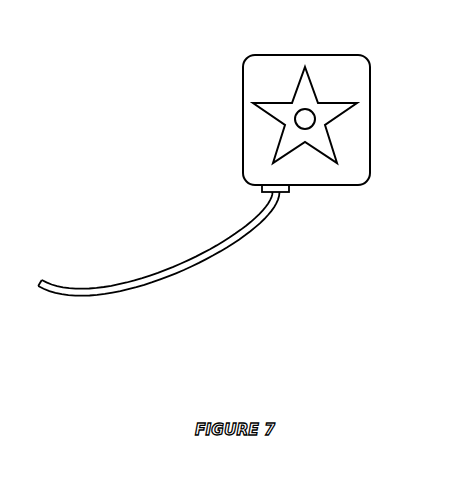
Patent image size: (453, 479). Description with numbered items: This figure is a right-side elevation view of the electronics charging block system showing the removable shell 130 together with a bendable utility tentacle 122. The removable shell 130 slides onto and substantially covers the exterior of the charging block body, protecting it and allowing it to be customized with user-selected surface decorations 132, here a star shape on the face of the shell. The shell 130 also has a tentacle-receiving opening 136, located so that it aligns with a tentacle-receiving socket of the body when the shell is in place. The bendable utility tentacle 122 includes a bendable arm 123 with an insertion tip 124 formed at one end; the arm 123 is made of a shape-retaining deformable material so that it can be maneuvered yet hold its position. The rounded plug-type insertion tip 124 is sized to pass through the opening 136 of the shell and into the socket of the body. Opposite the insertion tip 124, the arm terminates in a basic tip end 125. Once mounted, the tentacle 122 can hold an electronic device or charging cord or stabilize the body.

The removable shell 130 is at (377, 82).
The surface decorations 132 is at (325, 152).
The tentacle-receiving opening 136 is at (298, 119).
The insertion tip 124 is at (263, 193).
The bendable utility tentacle 122 is at (102, 274).
The bendable arm 123 is at (232, 249).
The tip end 125 is at (41, 281).